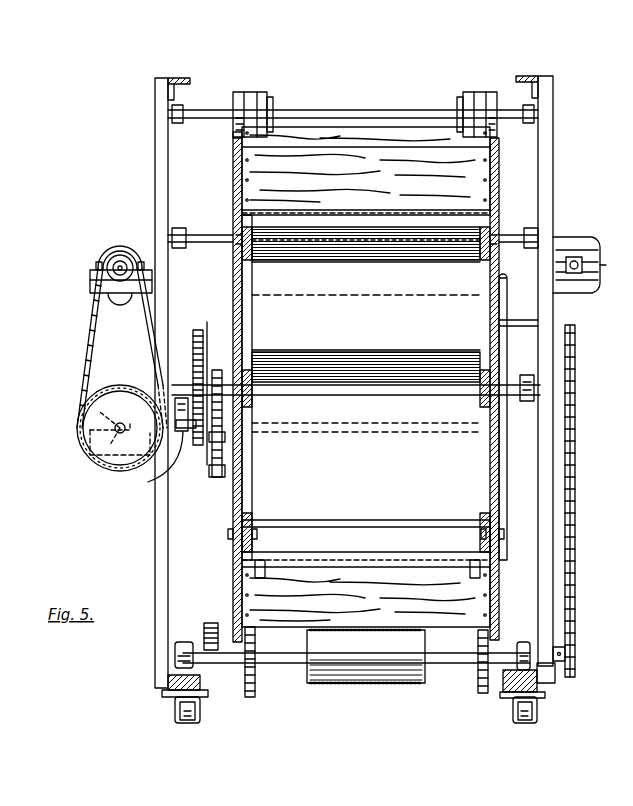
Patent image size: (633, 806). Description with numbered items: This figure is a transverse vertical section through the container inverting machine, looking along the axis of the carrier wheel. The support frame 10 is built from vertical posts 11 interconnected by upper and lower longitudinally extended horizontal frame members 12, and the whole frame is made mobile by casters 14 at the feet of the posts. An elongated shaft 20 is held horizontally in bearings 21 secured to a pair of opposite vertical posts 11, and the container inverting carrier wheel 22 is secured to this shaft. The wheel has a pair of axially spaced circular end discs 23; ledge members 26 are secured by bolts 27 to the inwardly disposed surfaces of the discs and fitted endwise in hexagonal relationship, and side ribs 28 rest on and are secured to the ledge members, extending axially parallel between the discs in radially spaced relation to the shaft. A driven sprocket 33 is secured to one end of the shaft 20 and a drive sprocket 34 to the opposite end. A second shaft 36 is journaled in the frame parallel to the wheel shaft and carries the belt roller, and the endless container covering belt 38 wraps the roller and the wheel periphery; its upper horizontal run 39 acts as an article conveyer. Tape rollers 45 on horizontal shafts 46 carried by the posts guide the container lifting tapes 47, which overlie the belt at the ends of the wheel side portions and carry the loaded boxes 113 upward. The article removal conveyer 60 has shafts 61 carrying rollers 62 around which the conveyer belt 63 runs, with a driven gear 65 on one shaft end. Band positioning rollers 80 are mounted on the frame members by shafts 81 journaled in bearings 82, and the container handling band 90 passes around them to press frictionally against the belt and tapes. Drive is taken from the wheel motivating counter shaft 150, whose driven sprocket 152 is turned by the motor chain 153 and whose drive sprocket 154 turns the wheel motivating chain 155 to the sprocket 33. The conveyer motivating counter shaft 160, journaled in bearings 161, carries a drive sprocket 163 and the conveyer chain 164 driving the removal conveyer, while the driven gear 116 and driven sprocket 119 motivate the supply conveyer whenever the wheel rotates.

The support frame 10 is at (558, 72).
The vertical posts 11 is at (160, 148).
The longitudinally extended horizontal frame members 12 is at (190, 78).
The casters 14 is at (185, 723).
The shaft 20 is at (405, 388).
The bearings 21 is at (181, 398).
The container inverting carrier wheel 22 is at (231, 177).
The circular end discs 23 is at (233, 195).
The ledge members 26 is at (255, 250).
The bolts 27 is at (262, 240).
The side ribs 28 is at (398, 228).
The driven sprocket 33 is at (208, 322).
The drive sprocket 34 is at (570, 372).
The shaft 36 is at (215, 236).
The container covering belt 38 is at (380, 548).
The upper horizontal run 39 is at (372, 225).
The tape rollers 45 is at (272, 97).
The shafts 46 is at (330, 110).
The container lifting tapes 47 is at (250, 92).
The article removal conveyer 60 is at (146, 235).
The shafts 61 is at (118, 258).
The rollers 62 is at (121, 258).
The conveyer belt 63 is at (96, 262).
The driven gear 65 is at (105, 258).
The band positioning rollers 80 is at (396, 668).
The shafts 81 is at (445, 664).
The bearings 82 is at (180, 645).
The container handling band 90 is at (368, 684).
The loaded boxes 113 is at (370, 135).
The driven gear 116 is at (212, 623).
The driven sprocket 119 is at (562, 648).
The wheel motivating counter shaft 150 is at (150, 482).
The driven sprocket 152 is at (226, 437).
The motor chain 153 is at (226, 470).
The drive sprocket 154 is at (212, 455).
The wheel motivating chain 155 is at (199, 330).
The conveyer motivating counter shaft 160 is at (118, 428).
The bearings 161 is at (90, 402).
The drive sprocket 163 is at (140, 380).
The conveyer chain 164 is at (88, 345).